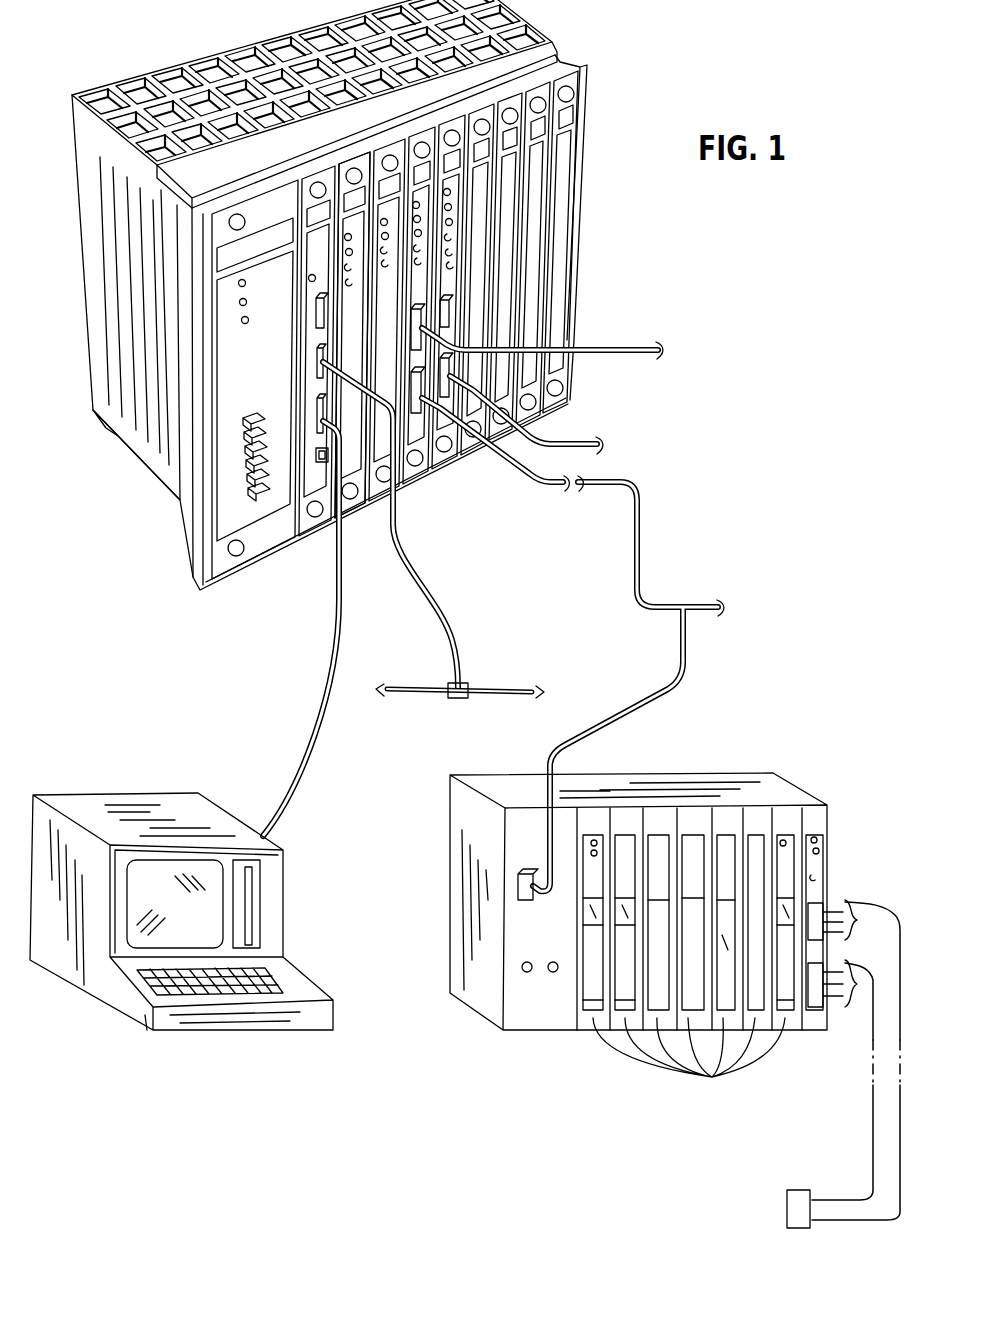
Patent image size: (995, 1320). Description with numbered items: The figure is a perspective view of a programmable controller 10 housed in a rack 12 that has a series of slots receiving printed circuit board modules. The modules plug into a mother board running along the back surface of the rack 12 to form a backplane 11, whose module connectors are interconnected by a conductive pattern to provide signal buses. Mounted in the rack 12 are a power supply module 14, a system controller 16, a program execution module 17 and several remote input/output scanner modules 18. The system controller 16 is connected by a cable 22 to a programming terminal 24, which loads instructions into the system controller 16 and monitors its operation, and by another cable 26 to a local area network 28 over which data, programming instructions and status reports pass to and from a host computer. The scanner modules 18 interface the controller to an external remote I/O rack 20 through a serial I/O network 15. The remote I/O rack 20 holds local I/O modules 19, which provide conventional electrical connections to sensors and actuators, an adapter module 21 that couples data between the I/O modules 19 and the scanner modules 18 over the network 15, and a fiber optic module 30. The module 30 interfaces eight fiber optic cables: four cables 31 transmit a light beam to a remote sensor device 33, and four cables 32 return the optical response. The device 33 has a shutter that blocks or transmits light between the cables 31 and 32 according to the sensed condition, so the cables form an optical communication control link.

The programmable controller 10 is at (329, 319).
The backplane 11 is at (176, 63).
The rack 12 is at (178, 502).
The power supply module 14 is at (235, 577).
The serial I/O network 15 is at (623, 355).
The system controller 16 is at (316, 520).
The program execution module 17 is at (350, 500).
The remote input/output scanner module 18 is at (437, 452).
The local I/O module 19 is at (692, 961).
The remote I/O rack 20 is at (652, 1000).
The adapter module 21 is at (537, 1017).
The cable 22 is at (317, 742).
The programming terminal 24 is at (284, 885).
The cable 26 is at (430, 597).
The local area network 28 is at (510, 688).
The fiber optic module 30 is at (848, 1027).
The fiber optic cables 31 is at (854, 1060).
The fiber optic cables 32 is at (848, 983).
The device 33 is at (797, 1193).